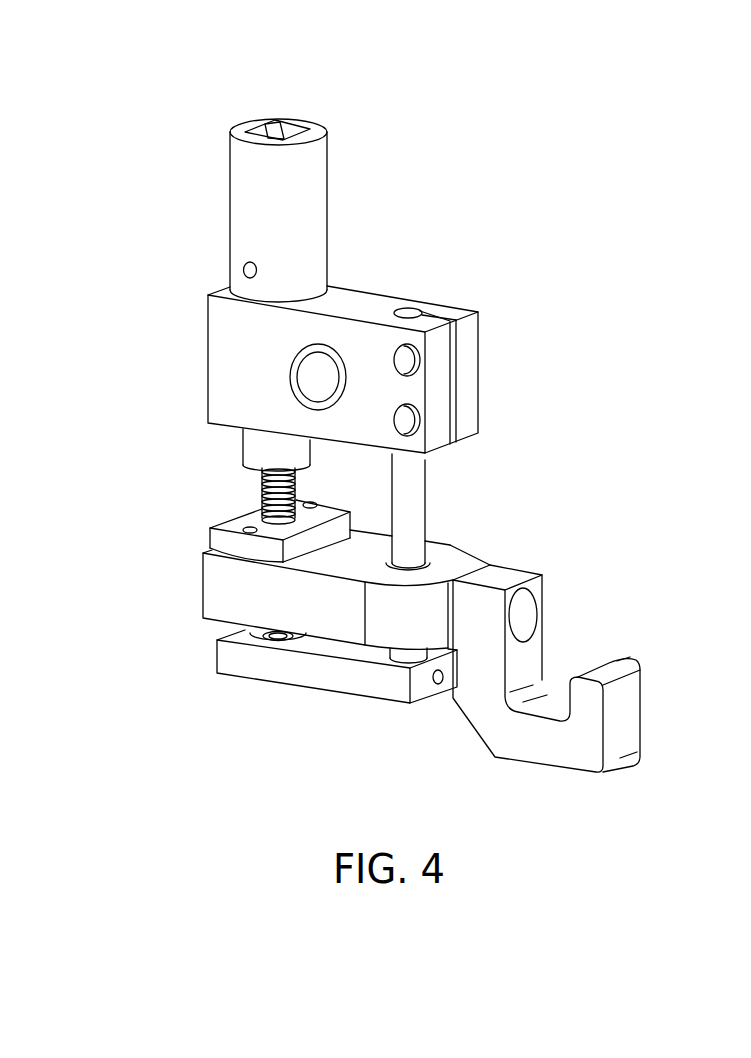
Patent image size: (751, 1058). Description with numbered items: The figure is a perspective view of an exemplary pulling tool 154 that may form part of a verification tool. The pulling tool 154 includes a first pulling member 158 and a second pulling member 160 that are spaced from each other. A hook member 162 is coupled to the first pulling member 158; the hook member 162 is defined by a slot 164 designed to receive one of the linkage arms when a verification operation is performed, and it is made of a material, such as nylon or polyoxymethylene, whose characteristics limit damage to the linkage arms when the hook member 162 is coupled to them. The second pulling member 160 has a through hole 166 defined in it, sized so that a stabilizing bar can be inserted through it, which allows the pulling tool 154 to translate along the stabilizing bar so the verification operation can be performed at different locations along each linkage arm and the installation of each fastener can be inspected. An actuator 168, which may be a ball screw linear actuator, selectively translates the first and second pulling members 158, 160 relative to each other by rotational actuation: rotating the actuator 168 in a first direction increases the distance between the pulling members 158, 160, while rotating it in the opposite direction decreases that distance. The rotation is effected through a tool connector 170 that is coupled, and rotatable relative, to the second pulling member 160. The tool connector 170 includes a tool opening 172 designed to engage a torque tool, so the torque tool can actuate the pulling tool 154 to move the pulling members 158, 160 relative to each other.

The pulling tool 154 is at (423, 58).
The first pulling member 158 is at (205, 615).
The second pulling member 160 is at (480, 363).
The hook member 162 is at (642, 725).
The slot 164 is at (580, 639).
The through hole 166 is at (297, 385).
The actuator 168 is at (217, 488).
The tool connector 170 is at (327, 205).
The tool opening 172 is at (287, 130).